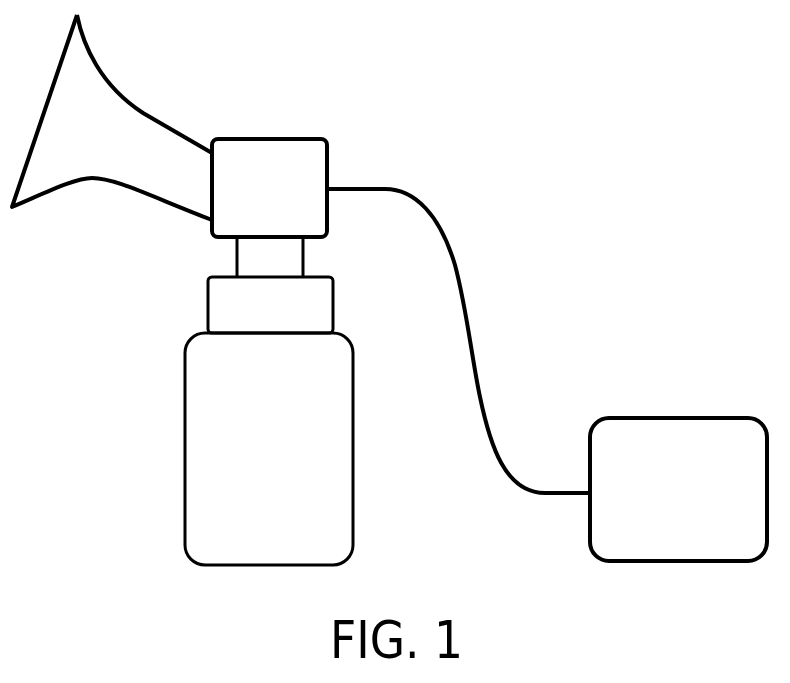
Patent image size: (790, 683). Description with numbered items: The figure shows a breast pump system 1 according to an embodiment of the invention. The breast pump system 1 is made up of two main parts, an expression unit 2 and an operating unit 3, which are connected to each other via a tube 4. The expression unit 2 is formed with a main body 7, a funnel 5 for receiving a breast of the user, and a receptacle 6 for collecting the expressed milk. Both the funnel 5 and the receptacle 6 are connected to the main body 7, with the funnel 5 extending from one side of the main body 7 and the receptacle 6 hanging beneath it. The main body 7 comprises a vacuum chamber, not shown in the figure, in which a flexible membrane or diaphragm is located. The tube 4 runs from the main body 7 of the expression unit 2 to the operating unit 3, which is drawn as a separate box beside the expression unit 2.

The breast pump system 1 is at (606, 188).
The expression unit 2 is at (143, 305).
The operating unit 3 is at (690, 418).
The tube 4 is at (471, 334).
The funnel 5 is at (145, 110).
The receptacle 6 is at (353, 448).
The main body 7 is at (275, 139).